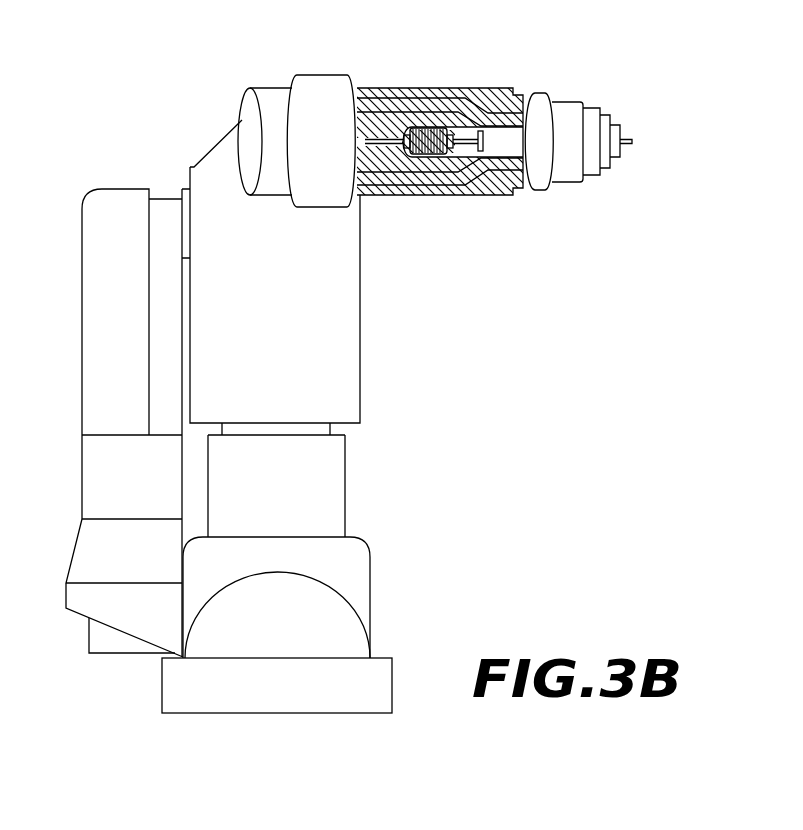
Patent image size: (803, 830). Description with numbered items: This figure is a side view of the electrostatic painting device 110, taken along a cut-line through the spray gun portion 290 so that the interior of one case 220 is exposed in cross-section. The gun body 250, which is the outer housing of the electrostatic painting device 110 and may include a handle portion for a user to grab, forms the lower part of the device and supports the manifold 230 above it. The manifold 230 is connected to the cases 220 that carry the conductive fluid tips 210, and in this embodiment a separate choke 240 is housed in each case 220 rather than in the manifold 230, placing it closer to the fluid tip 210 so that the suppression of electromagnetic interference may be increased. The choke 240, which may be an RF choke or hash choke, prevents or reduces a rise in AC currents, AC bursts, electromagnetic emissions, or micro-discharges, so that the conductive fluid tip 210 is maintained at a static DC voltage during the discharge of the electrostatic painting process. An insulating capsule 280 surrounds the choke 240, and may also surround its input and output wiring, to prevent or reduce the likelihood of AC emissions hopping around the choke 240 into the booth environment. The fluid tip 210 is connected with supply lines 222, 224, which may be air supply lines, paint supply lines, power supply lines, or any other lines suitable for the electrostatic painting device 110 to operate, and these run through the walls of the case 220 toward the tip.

The electrostatic painting device 110 is at (145, 80).
The conductive fluid tip 210 is at (638, 127).
The case 220 is at (432, 88).
The supply line 222 is at (493, 104).
The supply line 224 is at (495, 175).
The manifold 230 is at (202, 162).
The choke 240 is at (426, 150).
The gun body 250 is at (388, 577).
The insulating capsule 280 is at (407, 125).
The spray gun portion 290 is at (538, 284).